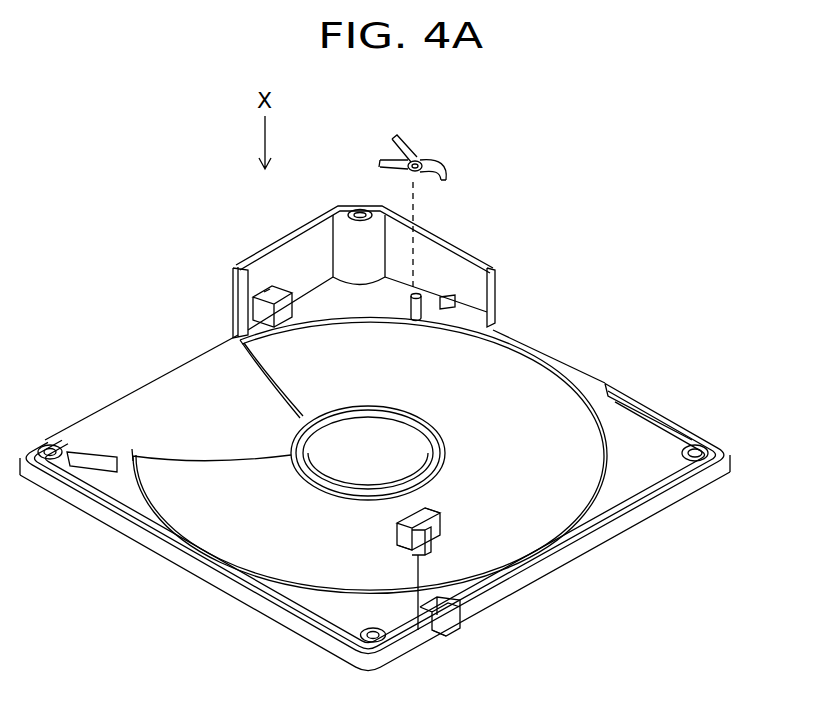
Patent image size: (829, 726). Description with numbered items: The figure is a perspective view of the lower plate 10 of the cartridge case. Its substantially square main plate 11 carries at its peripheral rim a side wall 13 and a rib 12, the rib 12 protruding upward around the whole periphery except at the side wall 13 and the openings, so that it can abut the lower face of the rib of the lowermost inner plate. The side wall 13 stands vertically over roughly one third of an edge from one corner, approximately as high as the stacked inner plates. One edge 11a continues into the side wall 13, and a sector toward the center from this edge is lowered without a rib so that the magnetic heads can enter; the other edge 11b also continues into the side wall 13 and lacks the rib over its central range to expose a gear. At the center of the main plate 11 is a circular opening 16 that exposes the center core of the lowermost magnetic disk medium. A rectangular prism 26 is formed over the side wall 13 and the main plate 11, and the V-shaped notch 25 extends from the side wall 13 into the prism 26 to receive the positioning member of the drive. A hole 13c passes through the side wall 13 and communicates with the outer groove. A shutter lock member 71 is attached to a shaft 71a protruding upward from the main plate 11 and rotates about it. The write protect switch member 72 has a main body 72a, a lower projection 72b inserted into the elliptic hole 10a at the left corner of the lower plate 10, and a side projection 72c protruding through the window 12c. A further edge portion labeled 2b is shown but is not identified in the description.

The lower plate 10 is at (605, 280).
The elliptic hole 10a is at (452, 633).
The main plate 11 is at (328, 300).
The one edge 11a is at (148, 387).
The other edge 11b is at (558, 363).
The rib 12 is at (507, 595).
The window 12c is at (424, 645).
The side wall 13 is at (240, 263).
The hole 13c is at (458, 303).
The circular opening 16 is at (392, 420).
The notch 25 is at (270, 288).
The rectangular prism 26 is at (276, 288).
The front edge of lower plate 2b is at (60, 500).
The shutter lock member 71 is at (448, 166).
The shaft 71a is at (417, 290).
The write protect switch member 72 is at (473, 528).
The main body 72a is at (430, 512).
The lower projection 72b is at (405, 560).
The side projection 72c is at (426, 554).